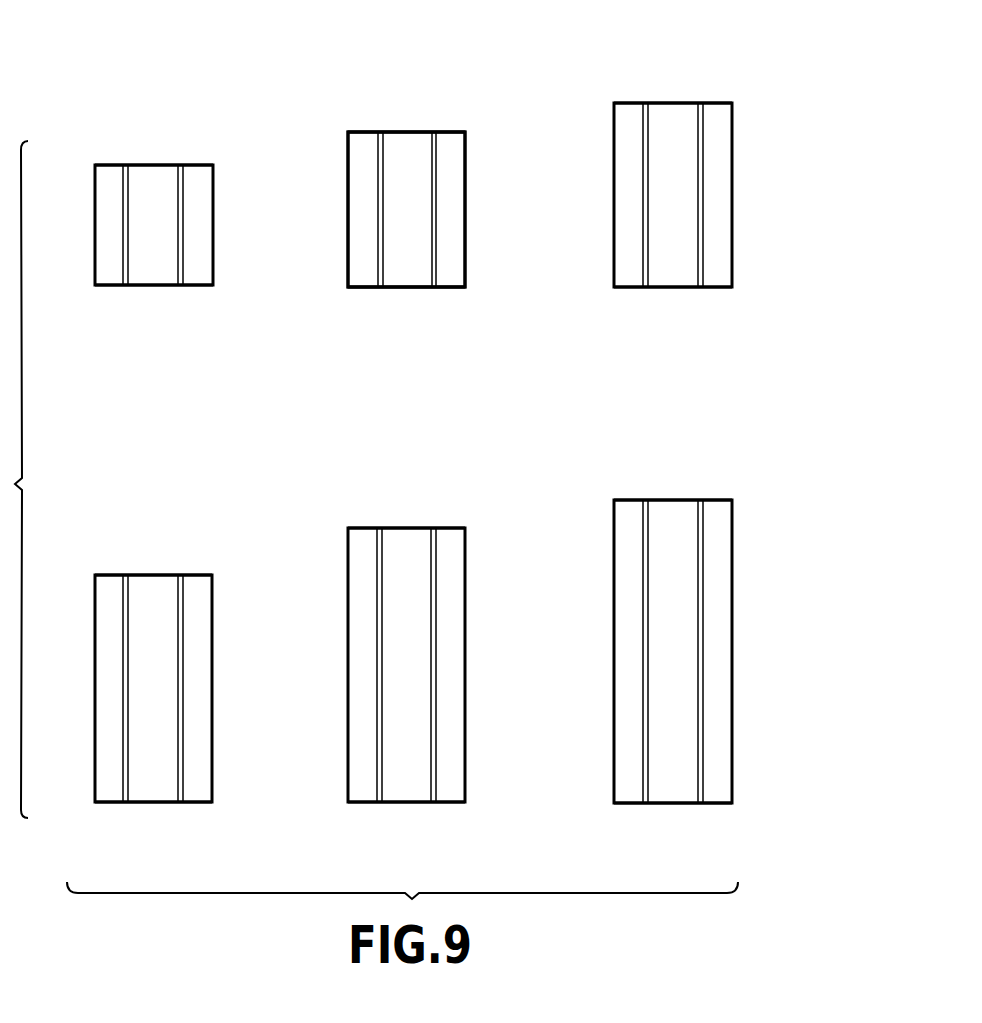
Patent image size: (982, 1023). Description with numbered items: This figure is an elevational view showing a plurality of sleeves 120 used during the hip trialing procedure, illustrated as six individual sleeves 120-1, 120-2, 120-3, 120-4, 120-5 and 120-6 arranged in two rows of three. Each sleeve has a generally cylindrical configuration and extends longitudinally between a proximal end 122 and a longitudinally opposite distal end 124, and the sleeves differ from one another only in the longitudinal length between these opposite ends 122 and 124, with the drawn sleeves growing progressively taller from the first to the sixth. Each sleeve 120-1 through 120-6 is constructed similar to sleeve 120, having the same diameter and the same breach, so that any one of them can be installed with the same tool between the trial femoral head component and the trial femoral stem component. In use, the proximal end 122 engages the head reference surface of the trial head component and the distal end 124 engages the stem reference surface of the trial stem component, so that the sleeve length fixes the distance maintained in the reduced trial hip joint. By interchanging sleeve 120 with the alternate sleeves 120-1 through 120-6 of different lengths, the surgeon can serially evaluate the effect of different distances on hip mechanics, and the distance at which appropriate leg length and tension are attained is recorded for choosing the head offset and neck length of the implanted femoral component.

The sleeve 120 is at (407, 119).
The sleeve 120-1 is at (213, 263).
The sleeve 120-2 is at (467, 263).
The sleeve 120-3 is at (733, 263).
The sleeve 120-4 is at (203, 772).
The sleeve 120-5 is at (458, 773).
The sleeve 120-6 is at (733, 780).
The proximal end 122 is at (202, 164).
The distal end 124 is at (112, 287).